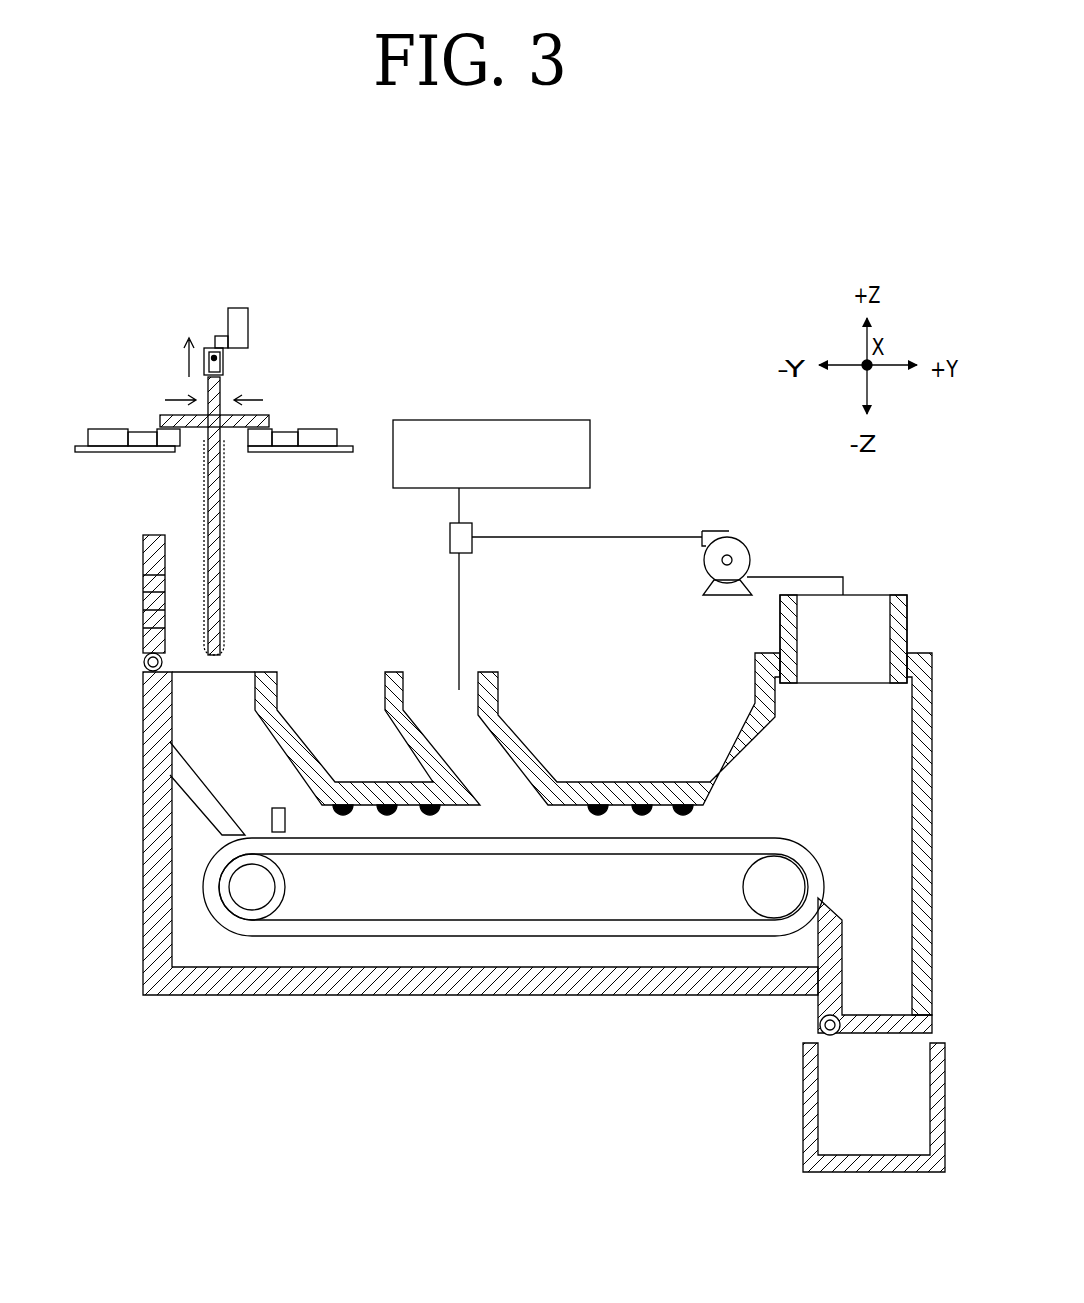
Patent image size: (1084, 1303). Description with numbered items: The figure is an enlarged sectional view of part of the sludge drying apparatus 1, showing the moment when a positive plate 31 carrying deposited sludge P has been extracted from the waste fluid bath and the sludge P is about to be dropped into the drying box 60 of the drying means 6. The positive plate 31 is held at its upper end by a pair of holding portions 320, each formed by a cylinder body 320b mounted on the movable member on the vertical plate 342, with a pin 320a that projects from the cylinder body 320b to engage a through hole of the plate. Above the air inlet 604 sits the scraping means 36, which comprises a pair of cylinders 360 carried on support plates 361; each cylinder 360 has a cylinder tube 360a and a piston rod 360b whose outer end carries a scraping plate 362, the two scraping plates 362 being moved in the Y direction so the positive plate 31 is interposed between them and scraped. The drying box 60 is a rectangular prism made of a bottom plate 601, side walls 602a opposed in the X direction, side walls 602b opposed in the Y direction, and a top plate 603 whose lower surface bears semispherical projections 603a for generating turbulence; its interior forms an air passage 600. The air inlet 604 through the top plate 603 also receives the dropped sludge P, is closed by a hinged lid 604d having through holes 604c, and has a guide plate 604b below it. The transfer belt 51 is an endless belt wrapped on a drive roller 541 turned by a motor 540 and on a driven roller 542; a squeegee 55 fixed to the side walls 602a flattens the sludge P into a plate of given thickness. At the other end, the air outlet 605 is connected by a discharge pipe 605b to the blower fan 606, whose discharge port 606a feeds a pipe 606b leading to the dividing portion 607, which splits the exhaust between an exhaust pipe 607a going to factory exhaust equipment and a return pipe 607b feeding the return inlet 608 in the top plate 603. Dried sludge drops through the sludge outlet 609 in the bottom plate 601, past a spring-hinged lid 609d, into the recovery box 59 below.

The sludge drying apparatus 1 is at (508, 353).
The drying means 6 is at (672, 460).
The positive plate 31 is at (223, 373).
The scraping means 36 is at (358, 425).
The holding portion 320 is at (204, 362).
The pin 320a is at (222, 357).
The cylinder body 320b is at (213, 350).
The vertical plate 342 is at (238, 308).
The sludge P is at (224, 552).
The cylinder 360 is at (99, 430).
The cylinder tube 360a is at (100, 428).
The piston rod 360b is at (140, 436).
The support plate 361 is at (83, 452).
The scraping plate 362 is at (197, 432).
The transfer belt 51 is at (463, 927).
The squeegee 55 is at (285, 820).
The recovery box 59 is at (810, 1065).
The drying box 60 is at (548, 977).
The motor 540 is at (250, 892).
The drive roller 541 is at (273, 903).
The driven roller 542 is at (770, 902).
The air passage 600 is at (603, 823).
The bottom plate 601 is at (663, 978).
The side wall 602a is at (752, 767).
The side wall 602b is at (927, 712).
The top plate 603 is at (642, 785).
The projection 603a is at (620, 808).
The air inlet 604 is at (225, 707).
The guide plate 604b is at (198, 790).
The through hole 604c is at (145, 600).
The lid 604d is at (145, 643).
The air outlet 605 is at (840, 653).
The discharge pipe 605b is at (843, 622).
The blower fan 606 is at (722, 535).
The discharge port 606a is at (702, 540).
The pipe 606b is at (640, 537).
The dividing portion 607 is at (473, 547).
The exhaust pipe 607a is at (465, 498).
The return pipe 607b is at (462, 608).
The return inlet 608 is at (438, 690).
The sludge outlet 609 is at (875, 1008).
The lid 609d is at (867, 1023).